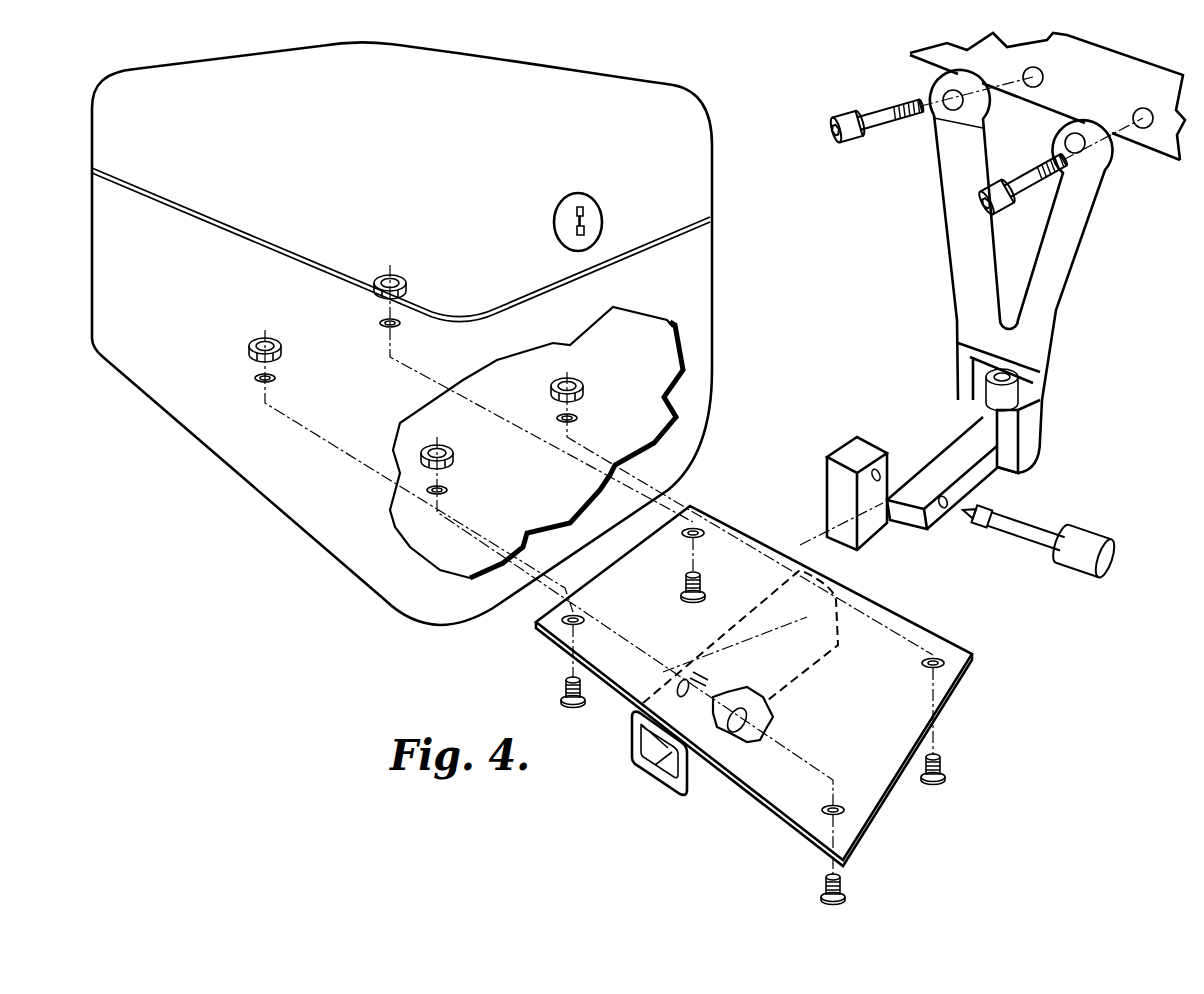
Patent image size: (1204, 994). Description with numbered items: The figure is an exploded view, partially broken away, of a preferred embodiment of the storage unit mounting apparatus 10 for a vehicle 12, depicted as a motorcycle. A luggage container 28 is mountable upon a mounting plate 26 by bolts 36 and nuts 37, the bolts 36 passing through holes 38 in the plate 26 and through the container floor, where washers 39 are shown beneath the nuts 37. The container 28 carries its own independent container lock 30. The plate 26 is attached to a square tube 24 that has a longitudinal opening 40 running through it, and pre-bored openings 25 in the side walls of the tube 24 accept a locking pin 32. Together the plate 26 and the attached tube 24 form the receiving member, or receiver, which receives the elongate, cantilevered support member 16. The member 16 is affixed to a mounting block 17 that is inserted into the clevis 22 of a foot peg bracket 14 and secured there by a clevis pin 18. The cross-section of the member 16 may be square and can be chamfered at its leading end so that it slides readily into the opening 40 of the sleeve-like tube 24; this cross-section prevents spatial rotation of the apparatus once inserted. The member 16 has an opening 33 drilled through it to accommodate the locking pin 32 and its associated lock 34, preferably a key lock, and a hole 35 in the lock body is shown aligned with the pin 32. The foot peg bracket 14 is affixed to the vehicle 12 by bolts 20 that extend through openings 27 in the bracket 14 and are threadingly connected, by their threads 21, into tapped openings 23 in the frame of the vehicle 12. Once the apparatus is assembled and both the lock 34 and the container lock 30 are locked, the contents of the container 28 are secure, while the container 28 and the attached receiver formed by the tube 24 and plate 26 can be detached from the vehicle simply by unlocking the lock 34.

The mounting system 10 is at (318, 632).
The vehicle 12 is at (967, 40).
The foot peg bracket 14 is at (972, 228).
The cantilevered support member 16 is at (967, 478).
The mounting block 17 is at (1030, 425).
The clevis pin 18 is at (980, 347).
The bolts 20 is at (877, 128).
The threads 21 is at (913, 123).
The clevis 22 is at (1033, 387).
The tapped openings 23 is at (1137, 112).
The square tube 24 is at (703, 770).
The pre-bored openings 25 is at (770, 692).
The mounting plate 26 is at (878, 648).
The openings 27 is at (945, 97).
The luggage container 28 is at (587, 103).
The container lock 30 is at (594, 210).
The locking pin 32 is at (1050, 540).
The opening 33 is at (947, 512).
The lock 34 is at (848, 457).
The block hole 35 is at (888, 468).
The bolts 36 is at (558, 687).
The nuts 37 is at (396, 262).
The plate hole 38 is at (690, 540).
The washer 39 is at (275, 378).
The longitudinal opening 40 is at (667, 752).